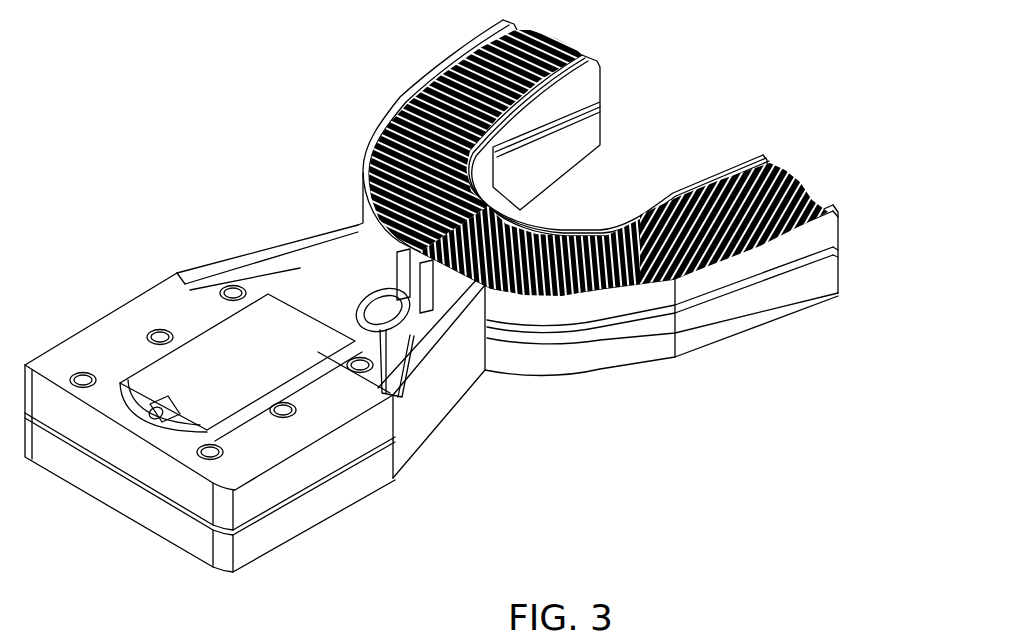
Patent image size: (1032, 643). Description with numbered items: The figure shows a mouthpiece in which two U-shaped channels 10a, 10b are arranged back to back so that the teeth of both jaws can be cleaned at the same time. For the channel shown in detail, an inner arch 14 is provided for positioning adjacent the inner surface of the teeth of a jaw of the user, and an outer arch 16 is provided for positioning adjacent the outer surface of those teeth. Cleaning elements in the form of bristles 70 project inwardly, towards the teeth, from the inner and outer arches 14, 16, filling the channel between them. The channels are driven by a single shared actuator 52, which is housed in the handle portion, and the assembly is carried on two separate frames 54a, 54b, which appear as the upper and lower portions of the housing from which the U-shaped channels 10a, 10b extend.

The U-shaped channel 10a is at (758, 258).
The U-shaped channel 10b is at (720, 325).
The inner arch 14 is at (590, 92).
The outer arch 16 is at (387, 121).
The actuator 52 is at (213, 335).
The frame 54a is at (417, 390).
The frame 54b is at (373, 477).
The bristles 70 is at (797, 190).